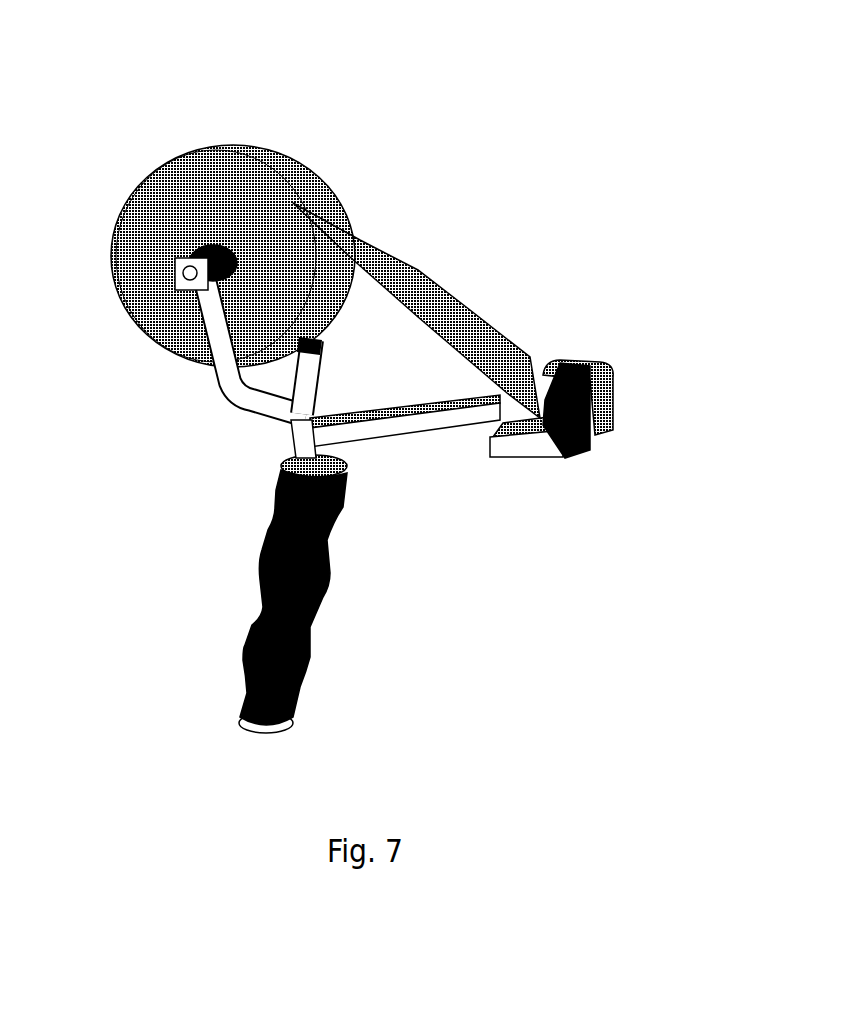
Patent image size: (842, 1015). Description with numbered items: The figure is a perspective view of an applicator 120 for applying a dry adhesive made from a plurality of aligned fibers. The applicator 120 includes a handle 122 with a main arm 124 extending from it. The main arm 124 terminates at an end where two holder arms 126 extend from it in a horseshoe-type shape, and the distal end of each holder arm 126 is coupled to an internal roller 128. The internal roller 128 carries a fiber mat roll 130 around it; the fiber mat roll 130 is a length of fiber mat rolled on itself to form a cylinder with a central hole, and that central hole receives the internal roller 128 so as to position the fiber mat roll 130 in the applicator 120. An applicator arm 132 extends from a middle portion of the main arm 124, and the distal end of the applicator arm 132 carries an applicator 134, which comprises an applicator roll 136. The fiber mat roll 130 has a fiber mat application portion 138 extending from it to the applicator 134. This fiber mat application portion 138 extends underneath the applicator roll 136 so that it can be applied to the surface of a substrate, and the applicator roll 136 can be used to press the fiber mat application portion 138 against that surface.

The applicator 120 is at (126, 79).
The handle 122 is at (243, 650).
The main arm 124 is at (298, 437).
The holder arm 126 is at (227, 373).
The internal roller 128 is at (213, 277).
The fiber mat roll 130 is at (205, 190).
The applicator arm 132 is at (407, 427).
The applicator 134 is at (541, 465).
The applicator roll 136 is at (597, 357).
The fiber mat application portion 138 is at (415, 287).